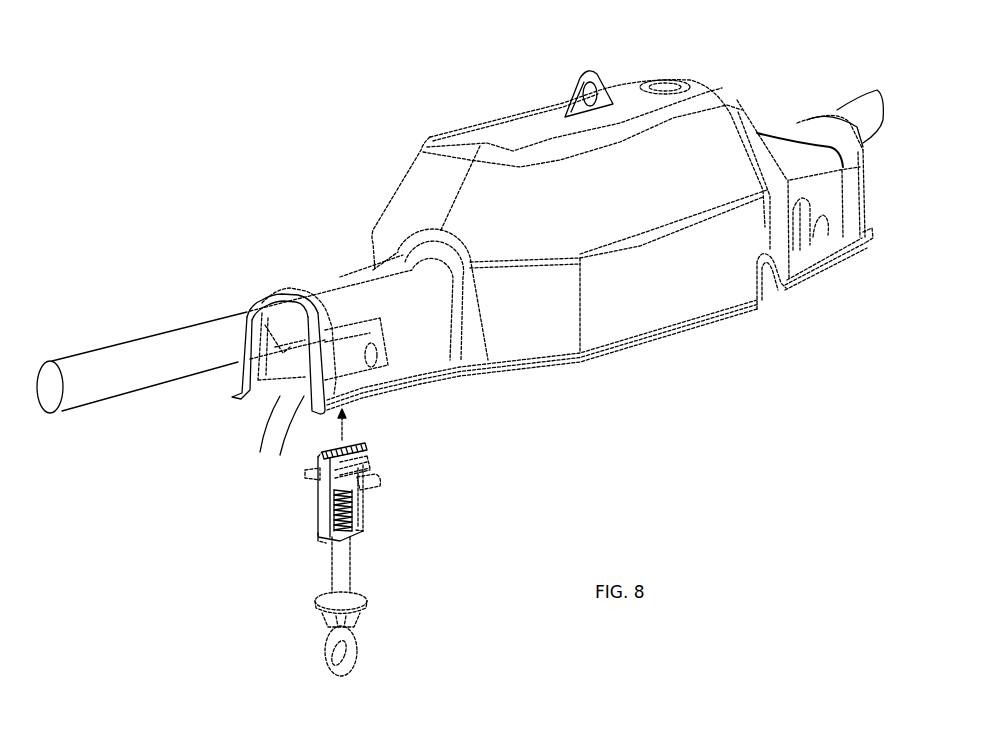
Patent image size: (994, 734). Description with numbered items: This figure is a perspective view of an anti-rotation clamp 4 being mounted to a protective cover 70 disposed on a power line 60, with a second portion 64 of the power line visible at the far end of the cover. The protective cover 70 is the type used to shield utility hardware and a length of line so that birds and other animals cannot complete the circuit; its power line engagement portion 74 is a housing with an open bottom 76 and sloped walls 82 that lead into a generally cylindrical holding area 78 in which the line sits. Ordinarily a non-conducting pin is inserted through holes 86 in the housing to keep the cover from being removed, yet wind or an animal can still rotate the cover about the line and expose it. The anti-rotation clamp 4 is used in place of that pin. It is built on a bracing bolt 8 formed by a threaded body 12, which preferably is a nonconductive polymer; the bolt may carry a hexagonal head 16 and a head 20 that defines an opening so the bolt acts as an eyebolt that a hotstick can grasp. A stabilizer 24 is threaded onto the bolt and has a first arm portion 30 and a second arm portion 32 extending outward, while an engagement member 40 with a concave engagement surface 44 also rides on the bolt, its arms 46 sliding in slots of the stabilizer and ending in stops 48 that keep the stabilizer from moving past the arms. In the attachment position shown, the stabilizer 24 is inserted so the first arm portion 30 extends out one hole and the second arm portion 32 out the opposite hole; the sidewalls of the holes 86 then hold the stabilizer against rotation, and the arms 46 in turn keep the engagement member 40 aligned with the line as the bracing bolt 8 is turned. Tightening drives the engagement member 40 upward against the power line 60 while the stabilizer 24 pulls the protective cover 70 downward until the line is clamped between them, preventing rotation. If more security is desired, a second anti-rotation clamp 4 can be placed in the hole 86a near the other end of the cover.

The anti-rotation clamp 4 is at (466, 597).
The bracing bolt 8 is at (330, 567).
The threaded body 12 is at (345, 577).
The head 16 is at (317, 620).
The head 20 is at (355, 657).
The stabilizer 24 is at (370, 468).
The first arm portion 30 is at (382, 487).
The second arm portion 32 is at (306, 472).
The engagement member 40 is at (367, 460).
The engagement surface 44 is at (347, 447).
The arms 46 is at (318, 505).
The stops 48 is at (320, 537).
The power line 60 is at (110, 347).
The second portion of a power line 64 is at (857, 97).
The protective cover 70 is at (425, 186).
The power line engagement portion 74 is at (322, 282).
The open bottom 76 is at (262, 402).
The generally cylindrical holding area 78 is at (270, 410).
The sloped walls 82 is at (300, 410).
The holes 86 is at (400, 387).
The hole 86a is at (847, 243).